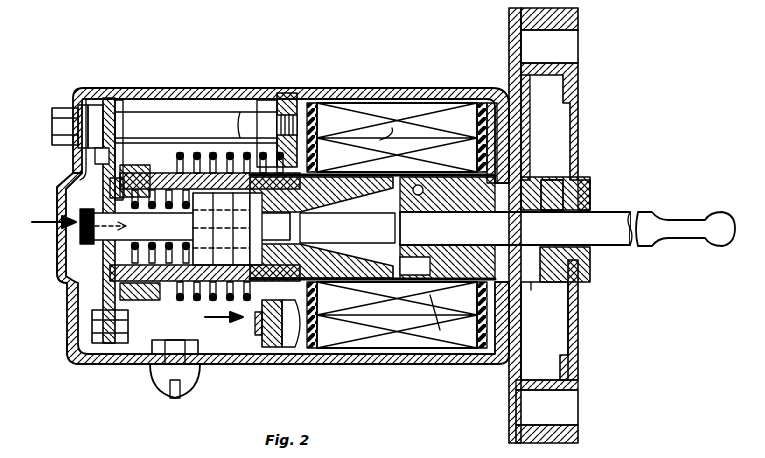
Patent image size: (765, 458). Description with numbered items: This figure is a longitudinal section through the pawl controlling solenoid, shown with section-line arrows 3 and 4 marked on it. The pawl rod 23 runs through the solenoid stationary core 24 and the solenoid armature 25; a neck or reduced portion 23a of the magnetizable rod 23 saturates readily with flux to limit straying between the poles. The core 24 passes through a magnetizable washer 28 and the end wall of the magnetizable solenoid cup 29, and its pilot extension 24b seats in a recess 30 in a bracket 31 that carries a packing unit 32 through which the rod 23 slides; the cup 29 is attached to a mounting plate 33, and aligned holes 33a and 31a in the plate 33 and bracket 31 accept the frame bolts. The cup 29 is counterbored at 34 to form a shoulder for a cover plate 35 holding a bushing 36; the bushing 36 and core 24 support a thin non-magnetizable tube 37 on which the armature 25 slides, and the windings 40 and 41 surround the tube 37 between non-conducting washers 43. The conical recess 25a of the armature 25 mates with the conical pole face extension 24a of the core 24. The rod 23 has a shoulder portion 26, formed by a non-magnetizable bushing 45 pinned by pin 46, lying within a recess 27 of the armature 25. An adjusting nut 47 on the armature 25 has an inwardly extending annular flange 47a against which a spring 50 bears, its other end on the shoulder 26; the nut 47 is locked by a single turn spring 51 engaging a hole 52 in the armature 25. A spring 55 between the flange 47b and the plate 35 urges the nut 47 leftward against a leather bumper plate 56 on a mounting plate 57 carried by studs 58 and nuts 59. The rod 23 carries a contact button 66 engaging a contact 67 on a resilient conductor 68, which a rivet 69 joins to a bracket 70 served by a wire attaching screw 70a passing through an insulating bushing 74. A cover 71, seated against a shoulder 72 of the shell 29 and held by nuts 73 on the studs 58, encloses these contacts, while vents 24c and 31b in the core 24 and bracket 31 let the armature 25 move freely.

The section line arrow 3 is at (44, 224).
The section line arrow 4 is at (223, 318).
The pawl rod 23 is at (60, 190).
The neck or reduced portion 23a is at (415, 266).
The solenoid stationary core 24 is at (462, 196).
The conical pole face extension 24a is at (418, 196).
The pilot extension 24b is at (540, 214).
The vent 24c is at (535, 282).
The solenoid armature 25 is at (352, 172).
The conical recess 25a is at (386, 212).
The shoulder portion 26 is at (250, 212).
The recess 27 is at (210, 172).
The magnetizable washer 28 is at (513, 133).
The solenoid cup 29 is at (418, 88).
The recess 30 is at (548, 180).
The bracket 31 is at (578, 85).
The hole 31a is at (575, 42).
The vent 31b is at (578, 338).
The packing unit 32 is at (588, 182).
The mounting plate 33 is at (509, 14).
The hole 33a is at (509, 42).
The counterbore 34 is at (303, 100).
The cover plate 35 is at (287, 115).
The bushing 36 is at (322, 150).
The non-magnetizable tube 37 is at (390, 132).
The solenoid winding 40 is at (398, 340).
The solenoid winding 41 is at (440, 330).
The non-conducting washers 43 is at (312, 348).
The non-magnetizable bushing 45 is at (195, 226).
The pin 46 is at (265, 229).
The adjusting nut 47 is at (133, 143).
The inwardly extending annular flange 47a is at (110, 186).
The flange 47b is at (173, 143).
The spring 50 is at (138, 143).
The single turn spring 51 is at (196, 300).
The hole 52 is at (205, 150).
The spring 55 is at (232, 150).
The leather bumper plate 56 is at (130, 290).
The mounting plate 57 is at (109, 98).
The studs 58 is at (253, 112).
The nuts 59 is at (86, 100).
The contact button 66 is at (186, 226).
The contact 67 is at (78, 236).
The resilient conductor 68 is at (60, 282).
The rivet 69 is at (92, 320).
The bracket 70 is at (152, 340).
The wire attaching screw 70a is at (168, 392).
The cover 71 is at (70, 360).
The shoulder 72 is at (290, 364).
The nuts 73 is at (62, 108).
The bushings 74 is at (152, 364).